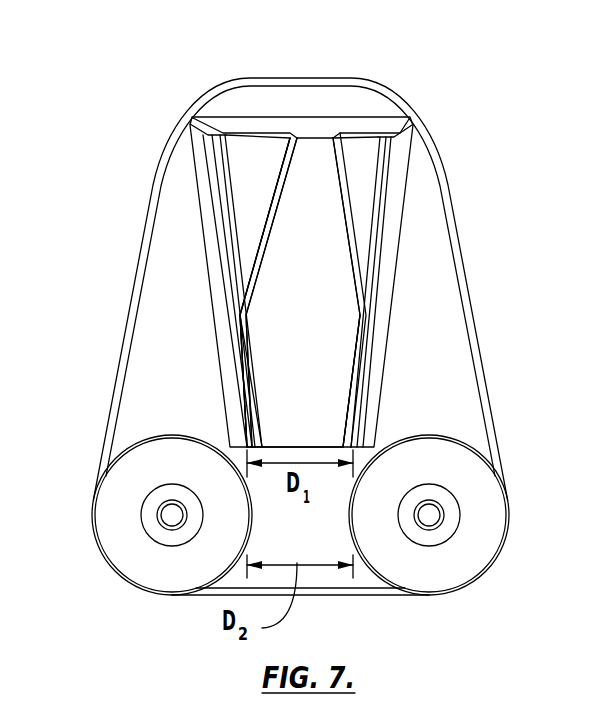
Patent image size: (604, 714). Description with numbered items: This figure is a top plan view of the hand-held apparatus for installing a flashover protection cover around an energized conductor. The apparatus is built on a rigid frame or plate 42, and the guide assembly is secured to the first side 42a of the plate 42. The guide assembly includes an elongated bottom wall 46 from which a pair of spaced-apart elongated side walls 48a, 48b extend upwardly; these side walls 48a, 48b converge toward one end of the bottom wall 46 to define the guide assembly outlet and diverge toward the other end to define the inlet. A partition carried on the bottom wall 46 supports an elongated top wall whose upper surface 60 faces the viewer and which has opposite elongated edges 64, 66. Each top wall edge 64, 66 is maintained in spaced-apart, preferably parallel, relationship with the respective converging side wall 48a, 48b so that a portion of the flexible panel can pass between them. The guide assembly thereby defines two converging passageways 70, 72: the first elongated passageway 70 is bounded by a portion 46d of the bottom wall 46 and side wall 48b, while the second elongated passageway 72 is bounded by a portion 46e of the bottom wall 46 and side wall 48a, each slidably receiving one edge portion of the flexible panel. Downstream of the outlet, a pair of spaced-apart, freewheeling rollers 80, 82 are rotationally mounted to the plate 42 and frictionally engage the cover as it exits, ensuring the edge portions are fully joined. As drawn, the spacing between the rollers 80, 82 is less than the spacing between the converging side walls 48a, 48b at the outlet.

The rigid frame or plate 42 is at (493, 422).
The first side of the plate 42a is at (331, 548).
The elongated bottom wall 46 is at (360, 132).
The portion of the bottom wall 46d is at (253, 167).
The portion of the bottom wall 46e is at (357, 177).
The elongated side wall 48a is at (217, 312).
The elongated side wall 48b is at (377, 370).
The upper surface of the top wall 60 is at (318, 237).
The top wall elongated edge 64 is at (250, 357).
The top wall elongated edge 66 is at (338, 387).
The first elongated passageway 70 is at (362, 234).
The second elongated passageway 72 is at (252, 236).
The roller 80 is at (480, 542).
The roller 82 is at (130, 543).